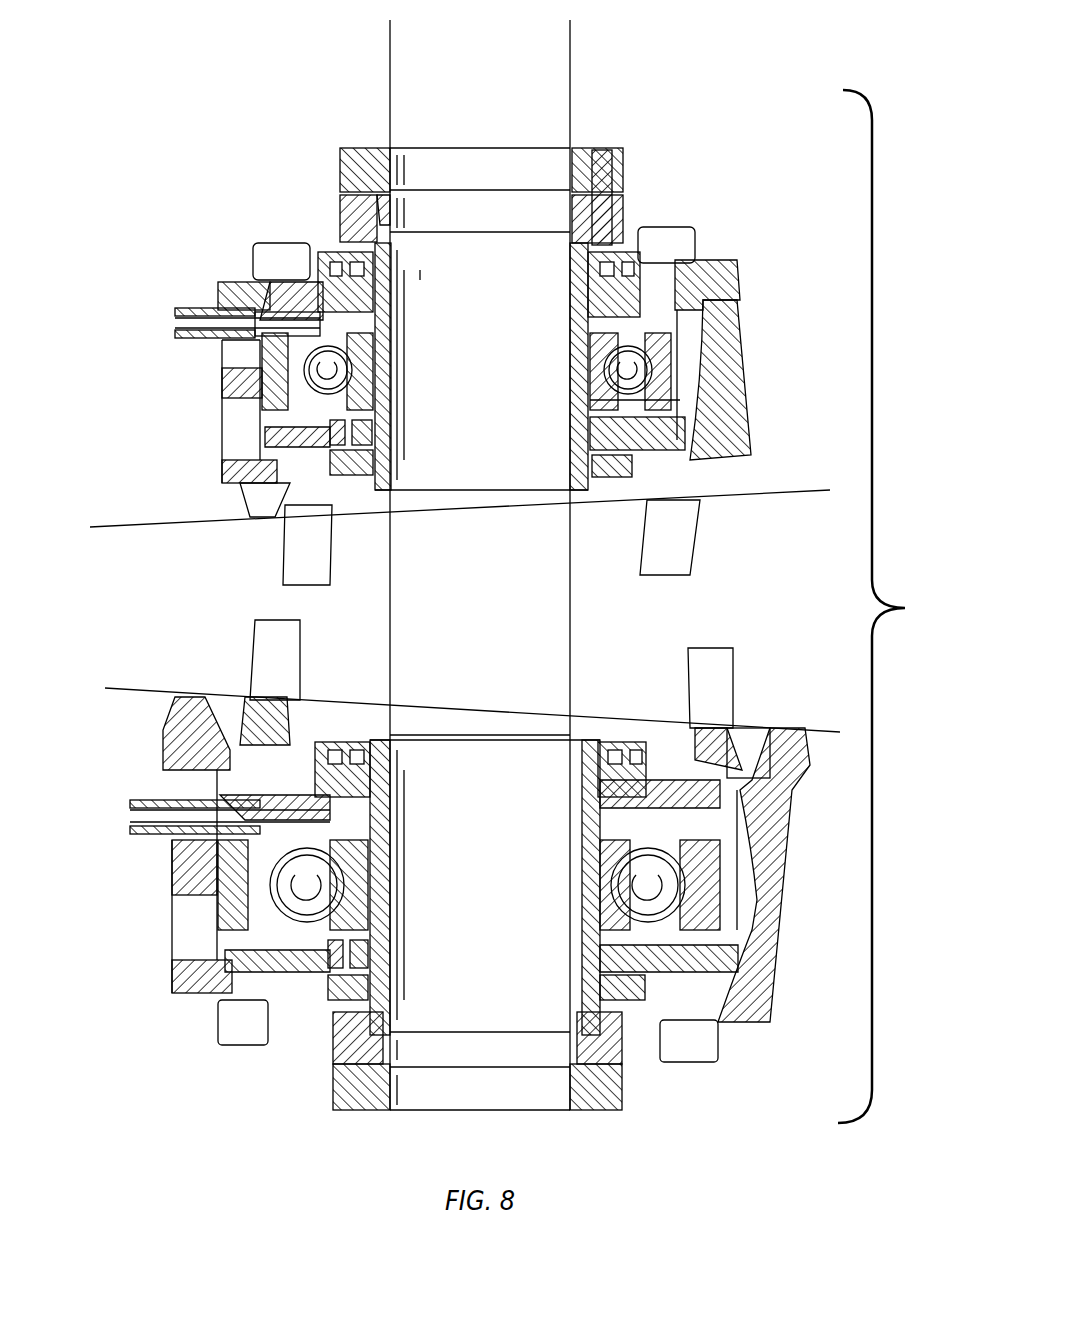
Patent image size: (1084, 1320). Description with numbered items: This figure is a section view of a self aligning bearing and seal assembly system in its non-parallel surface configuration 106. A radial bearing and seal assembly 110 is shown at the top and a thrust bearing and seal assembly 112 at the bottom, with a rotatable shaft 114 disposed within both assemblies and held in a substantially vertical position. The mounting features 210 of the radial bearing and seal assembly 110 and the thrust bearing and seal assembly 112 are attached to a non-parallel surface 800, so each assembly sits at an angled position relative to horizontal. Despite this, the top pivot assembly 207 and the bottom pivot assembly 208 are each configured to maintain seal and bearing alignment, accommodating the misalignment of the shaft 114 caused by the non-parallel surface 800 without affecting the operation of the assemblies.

The non-parallel surface configuration 106 is at (910, 600).
The radial bearing and seal assembly 110 is at (459, 428).
The thrust bearing and seal assembly 112 is at (458, 907).
The rotatable shaft 114 is at (575, 607).
The top pivot assembly 207 is at (288, 472).
The bottom pivot assembly 208 is at (270, 990).
The mounting features 210 is at (702, 508).
The non-parallel surface 800 is at (790, 488).